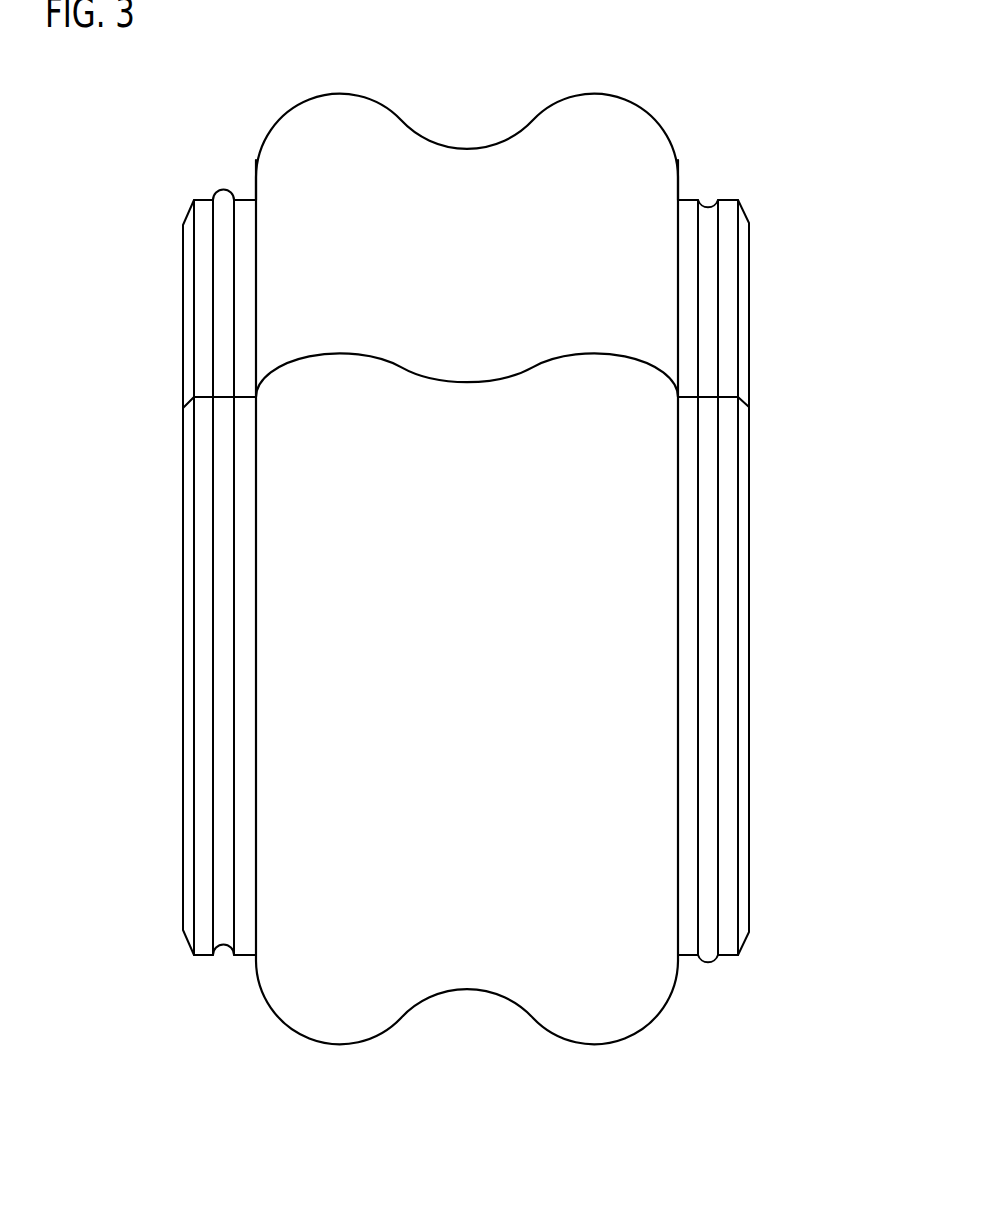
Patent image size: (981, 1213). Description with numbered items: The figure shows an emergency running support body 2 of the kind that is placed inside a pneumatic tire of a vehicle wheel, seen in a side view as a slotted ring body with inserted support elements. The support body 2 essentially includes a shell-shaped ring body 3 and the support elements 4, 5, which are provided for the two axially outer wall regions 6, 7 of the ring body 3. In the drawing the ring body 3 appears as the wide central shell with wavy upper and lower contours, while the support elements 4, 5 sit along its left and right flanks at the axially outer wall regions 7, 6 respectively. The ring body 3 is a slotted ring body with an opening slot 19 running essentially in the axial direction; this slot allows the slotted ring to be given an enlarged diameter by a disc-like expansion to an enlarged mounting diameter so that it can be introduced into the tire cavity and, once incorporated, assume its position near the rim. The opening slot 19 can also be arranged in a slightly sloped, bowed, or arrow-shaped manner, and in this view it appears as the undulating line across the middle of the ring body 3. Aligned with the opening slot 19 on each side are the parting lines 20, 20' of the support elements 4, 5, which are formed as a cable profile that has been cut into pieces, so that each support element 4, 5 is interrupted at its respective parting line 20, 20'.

The emergency running support body 2 is at (541, 97).
The ring body 3 is at (605, 173).
The support element 4 is at (202, 622).
The support element 5 is at (692, 618).
The axially outer wall region 6 is at (700, 165).
The axially outer wall region 7 is at (232, 158).
The opening slot 19 is at (593, 347).
The parting line 20 is at (132, 375).
The parting line 20' is at (776, 374).